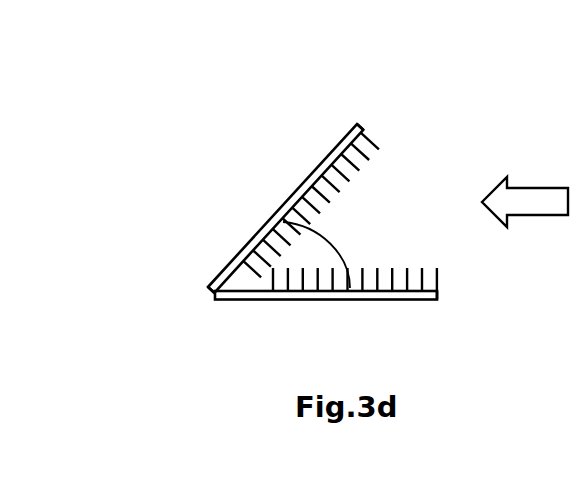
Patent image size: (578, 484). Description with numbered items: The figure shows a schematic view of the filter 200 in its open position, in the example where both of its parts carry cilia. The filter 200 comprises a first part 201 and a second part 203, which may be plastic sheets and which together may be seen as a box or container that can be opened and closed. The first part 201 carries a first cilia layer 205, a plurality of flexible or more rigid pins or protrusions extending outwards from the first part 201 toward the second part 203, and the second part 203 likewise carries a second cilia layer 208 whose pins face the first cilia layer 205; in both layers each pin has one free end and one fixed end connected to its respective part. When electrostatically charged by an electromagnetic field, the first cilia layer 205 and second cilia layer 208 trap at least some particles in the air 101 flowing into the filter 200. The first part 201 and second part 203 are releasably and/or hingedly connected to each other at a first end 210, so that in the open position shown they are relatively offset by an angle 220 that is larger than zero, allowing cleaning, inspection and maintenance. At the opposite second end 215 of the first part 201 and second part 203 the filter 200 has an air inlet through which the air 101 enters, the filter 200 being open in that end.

The filter 200 is at (242, 102).
The first part 201 is at (317, 299).
The second part 203 is at (284, 203).
The first cilia layer 205 is at (408, 276).
The second cilia layer 208 is at (358, 172).
The first end 210 is at (210, 294).
The second end 215 is at (377, 83).
The angle 220 is at (348, 270).
The air 101 is at (525, 202).